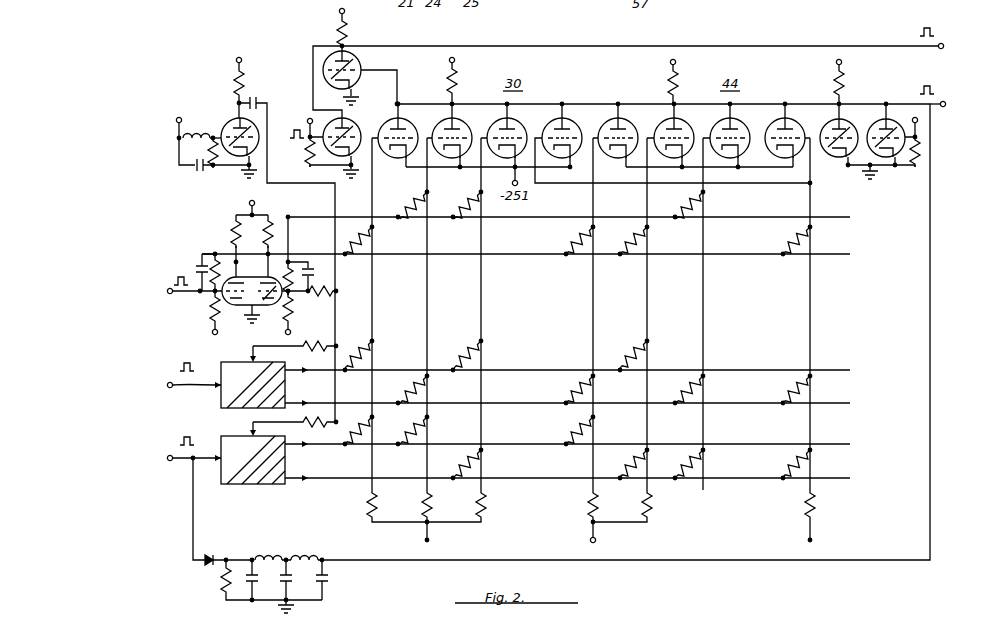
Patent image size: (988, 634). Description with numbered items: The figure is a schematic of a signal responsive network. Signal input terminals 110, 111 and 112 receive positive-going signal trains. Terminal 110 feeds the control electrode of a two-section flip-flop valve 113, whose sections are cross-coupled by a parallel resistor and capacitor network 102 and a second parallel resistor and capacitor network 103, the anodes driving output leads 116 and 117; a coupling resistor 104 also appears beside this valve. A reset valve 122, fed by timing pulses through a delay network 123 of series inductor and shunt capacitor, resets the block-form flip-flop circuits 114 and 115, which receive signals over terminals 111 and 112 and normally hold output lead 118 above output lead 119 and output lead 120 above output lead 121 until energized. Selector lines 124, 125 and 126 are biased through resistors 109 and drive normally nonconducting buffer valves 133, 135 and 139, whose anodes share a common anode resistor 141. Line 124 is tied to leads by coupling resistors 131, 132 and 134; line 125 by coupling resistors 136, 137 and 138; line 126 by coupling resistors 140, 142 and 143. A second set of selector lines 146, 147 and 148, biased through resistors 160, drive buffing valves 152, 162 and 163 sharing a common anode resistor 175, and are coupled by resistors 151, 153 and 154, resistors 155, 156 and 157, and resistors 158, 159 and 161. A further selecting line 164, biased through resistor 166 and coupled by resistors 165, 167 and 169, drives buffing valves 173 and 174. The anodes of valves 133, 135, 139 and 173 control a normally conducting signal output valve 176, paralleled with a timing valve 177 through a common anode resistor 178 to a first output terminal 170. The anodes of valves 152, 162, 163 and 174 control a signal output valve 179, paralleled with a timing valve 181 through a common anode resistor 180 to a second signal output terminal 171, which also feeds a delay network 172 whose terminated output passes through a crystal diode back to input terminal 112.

The parallel resistor and capacitor network 102 is at (214, 262).
The parallel resistor and capacitor network 103 is at (312, 270).
The coupling resistor 104 is at (332, 300).
The selector line bias resistors 109 is at (368, 500).
The signal input terminal 110 is at (194, 295).
The signal input terminal 111 is at (194, 385).
The signal input terminal 112 is at (194, 498).
The two-section flip-flop valve 113 is at (244, 310).
The flip-flop circuit 114 is at (230, 408).
The flip-flop circuit 115 is at (265, 484).
The output lead 116 is at (853, 214).
The output lead 117 is at (850, 254).
The output lead 118 is at (848, 366).
The output lead 119 is at (848, 400).
The output lead 120 is at (850, 444).
The output lead 121 is at (850, 478).
The reset valve 122 is at (228, 121).
The delay network 123 is at (212, 131).
The selector line 124 is at (372, 300).
The selector line 125 is at (427, 300).
The selector line 126 is at (481, 300).
The coupling resistor 131 is at (358, 238).
The coupling resistor 132 is at (358, 336).
The buffer valve 133 is at (392, 120).
The coupling resistor 134 is at (358, 426).
The buffer valve 135 is at (446, 120).
The coupling resistor 136 is at (408, 204).
The coupling resistor 137 is at (410, 393).
The coupling resistor 138 is at (410, 432).
The buffer valve 139 is at (502, 120).
The coupling resistor 140 is at (466, 204).
The common anode resistor 141 is at (458, 84).
The coupling resistor 142 is at (468, 348).
The coupling resistor 143 is at (464, 466).
The selector line 146 is at (593, 310).
The selector line 147 is at (647, 310).
The selector line 148 is at (703, 310).
The coupling resistor 151 is at (574, 243).
The buffing valve 152 is at (604, 120).
The coupling resistor 153 is at (576, 393).
The coupling resistor 154 is at (578, 432).
The coupling resistor 155 is at (630, 243).
The coupling resistor 156 is at (630, 348).
The coupling resistor 157 is at (630, 466).
The coupling resistor 158 is at (682, 204).
The coupling resistor 159 is at (684, 393).
The bias resistors 160 is at (590, 500).
The coupling resistor 161 is at (686, 466).
The buffing valve 162 is at (662, 125).
The buffing valve 163 is at (718, 125).
The selecting line 164 is at (810, 312).
The coupling resistor 165 is at (794, 243).
The resistor 166 is at (806, 504).
The coupling resistor 167 is at (790, 393).
The coupling resistor 169 is at (794, 466).
The first output terminal 170 is at (924, 46).
The second signal output terminal 171 is at (929, 104).
The delay network 172 is at (290, 552).
The buffing valve 173 is at (566, 118).
The buffing valve 174 is at (774, 125).
The common anode resistor 175 is at (668, 84).
The signal output valve 176 is at (363, 68).
The timing valve 177 is at (353, 124).
The common anode resistor 178 is at (340, 33).
The signal output valve 179 is at (828, 122).
The common anode resistor 180 is at (848, 86).
The timing valve 181 is at (868, 124).